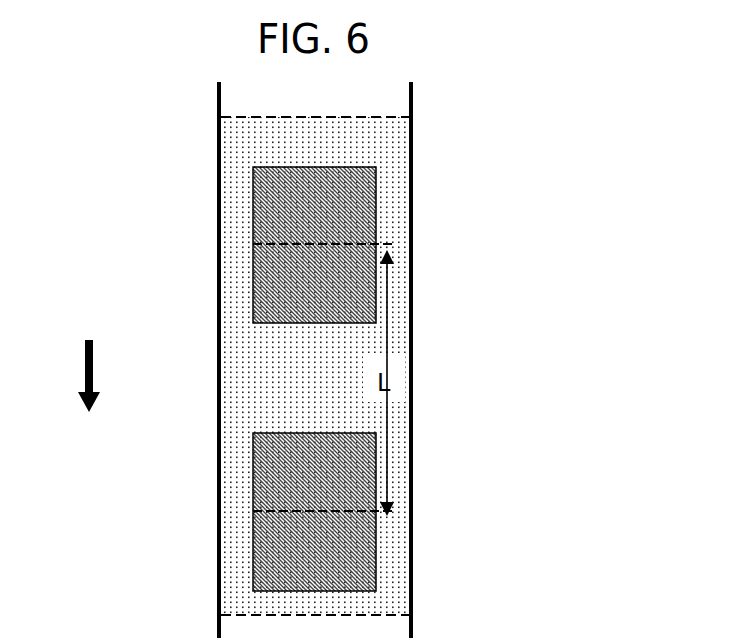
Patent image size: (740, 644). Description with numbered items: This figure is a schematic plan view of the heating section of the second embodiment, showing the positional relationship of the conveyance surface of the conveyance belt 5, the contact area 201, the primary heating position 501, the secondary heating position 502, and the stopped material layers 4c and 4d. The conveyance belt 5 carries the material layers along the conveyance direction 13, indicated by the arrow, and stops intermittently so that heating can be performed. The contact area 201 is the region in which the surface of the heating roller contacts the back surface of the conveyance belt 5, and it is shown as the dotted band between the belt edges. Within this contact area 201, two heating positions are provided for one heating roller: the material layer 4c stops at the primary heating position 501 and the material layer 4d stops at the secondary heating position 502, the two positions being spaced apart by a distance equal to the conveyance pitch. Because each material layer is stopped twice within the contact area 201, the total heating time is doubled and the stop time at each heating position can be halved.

The conveyance belt 5 is at (390, 100).
The contact area 201 is at (400, 192).
The material layer 4c is at (260, 300).
The material layer 4d is at (262, 552).
The primary heating position 501 is at (253, 244).
The secondary heating position 502 is at (253, 511).
The conveyance direction 13 is at (85, 379).